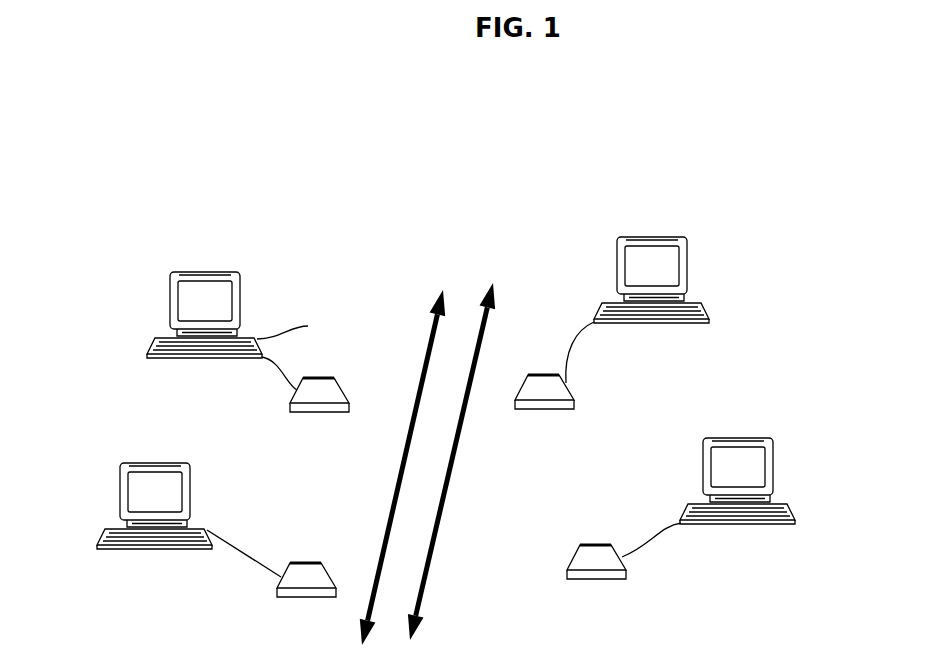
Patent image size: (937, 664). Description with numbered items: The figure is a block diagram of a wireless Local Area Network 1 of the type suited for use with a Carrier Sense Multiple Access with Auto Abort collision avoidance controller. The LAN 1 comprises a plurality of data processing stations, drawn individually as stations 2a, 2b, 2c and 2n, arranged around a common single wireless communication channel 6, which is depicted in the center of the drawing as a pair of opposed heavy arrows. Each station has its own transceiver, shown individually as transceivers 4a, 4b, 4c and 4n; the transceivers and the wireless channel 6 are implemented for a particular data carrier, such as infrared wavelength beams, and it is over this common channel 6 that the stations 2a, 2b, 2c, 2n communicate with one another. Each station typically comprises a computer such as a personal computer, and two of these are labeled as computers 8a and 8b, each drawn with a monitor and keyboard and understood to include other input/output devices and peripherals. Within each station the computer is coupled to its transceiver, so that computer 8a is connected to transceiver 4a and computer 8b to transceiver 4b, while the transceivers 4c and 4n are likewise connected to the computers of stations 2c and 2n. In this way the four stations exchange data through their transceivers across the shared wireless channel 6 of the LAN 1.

The wireless Local Area Network 1 is at (378, 284).
The station 2a is at (108, 498).
The station 2b is at (246, 306).
The station 2c is at (781, 470).
The station 2n is at (726, 302).
The transceiver 4a is at (305, 563).
The transceiver 4b is at (340, 387).
The transceiver 4c is at (573, 556).
The transceiver 4n is at (547, 375).
The wireless communication channel 6 is at (427, 464).
The computer 8a is at (205, 530).
The computer 8b is at (295, 326).